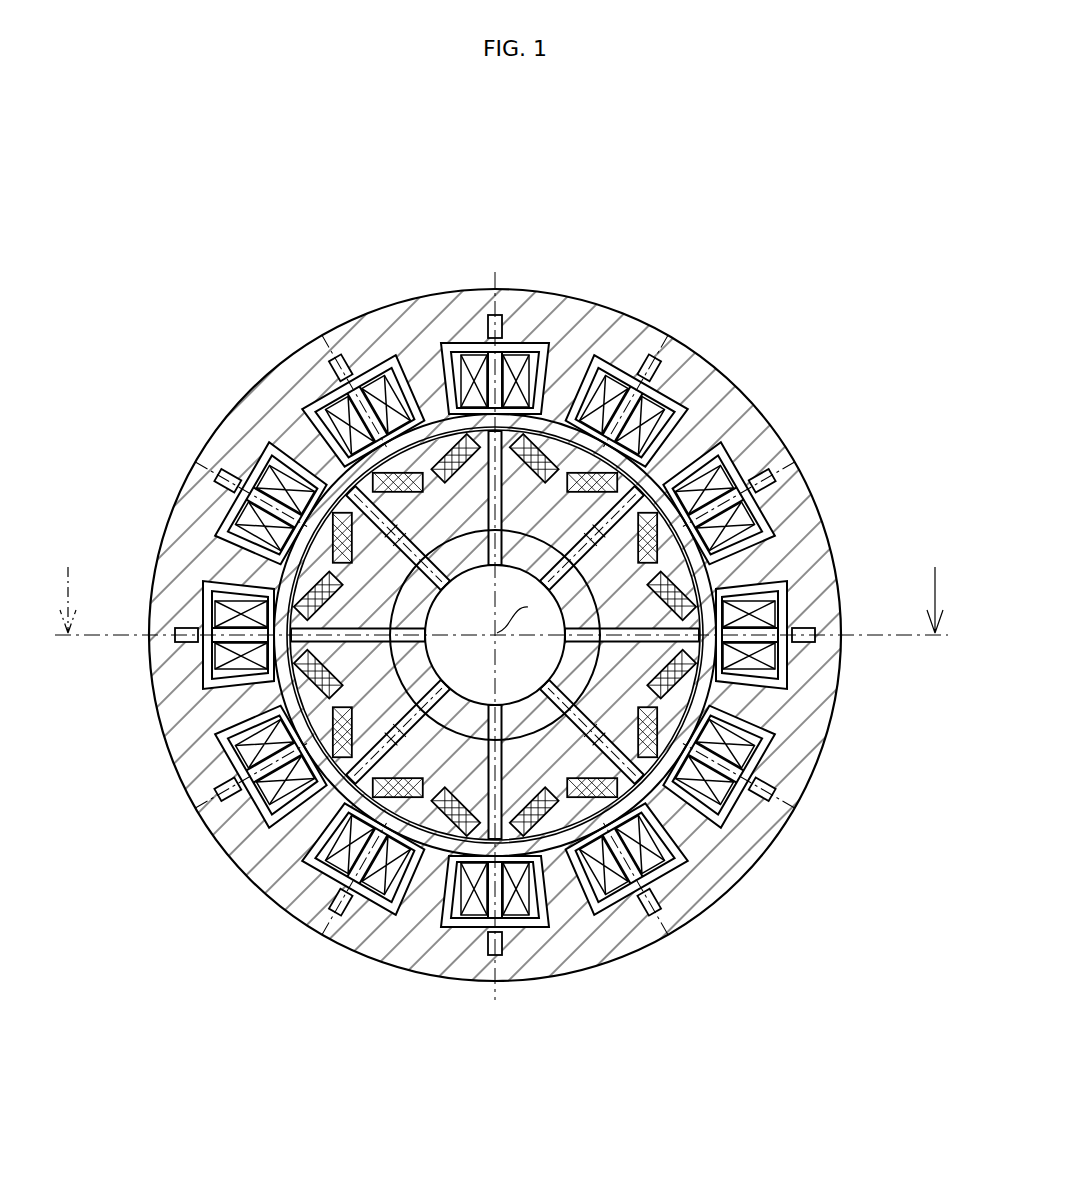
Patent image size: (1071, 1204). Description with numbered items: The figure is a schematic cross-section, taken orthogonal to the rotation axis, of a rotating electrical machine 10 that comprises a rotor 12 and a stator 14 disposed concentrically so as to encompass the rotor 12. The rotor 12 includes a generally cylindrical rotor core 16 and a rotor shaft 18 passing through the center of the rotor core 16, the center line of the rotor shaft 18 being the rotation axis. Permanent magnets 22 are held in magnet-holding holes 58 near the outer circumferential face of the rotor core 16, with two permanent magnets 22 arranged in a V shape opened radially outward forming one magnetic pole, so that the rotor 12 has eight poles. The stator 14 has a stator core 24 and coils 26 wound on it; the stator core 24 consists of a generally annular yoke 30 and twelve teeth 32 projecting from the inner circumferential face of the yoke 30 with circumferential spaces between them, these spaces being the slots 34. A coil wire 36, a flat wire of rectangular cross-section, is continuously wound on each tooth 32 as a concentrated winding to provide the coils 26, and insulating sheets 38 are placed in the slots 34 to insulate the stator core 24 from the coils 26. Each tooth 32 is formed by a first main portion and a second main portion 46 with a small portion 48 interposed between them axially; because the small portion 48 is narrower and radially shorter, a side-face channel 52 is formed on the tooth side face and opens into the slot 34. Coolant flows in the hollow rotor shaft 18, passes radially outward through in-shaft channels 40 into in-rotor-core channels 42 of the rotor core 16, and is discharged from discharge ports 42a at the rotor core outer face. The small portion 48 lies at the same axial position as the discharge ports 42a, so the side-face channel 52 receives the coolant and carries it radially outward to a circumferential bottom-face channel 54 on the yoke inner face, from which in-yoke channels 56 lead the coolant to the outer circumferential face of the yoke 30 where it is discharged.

The rotating electrical machine 10 is at (844, 170).
The rotor 12 is at (438, 385).
The stator 14 is at (536, 289).
The rotor core 16 is at (427, 457).
The rotor shaft 18 is at (297, 453).
The permanent magnets 22 is at (385, 486).
The stator core 24 is at (585, 330).
The coils 26 is at (625, 340).
The yoke 30 is at (680, 363).
The teeth 32 is at (680, 450).
The slots 34 is at (765, 447).
The coil wire 36 is at (790, 500).
The insulating sheets 38 is at (790, 535).
The in-shaft channels 40 is at (378, 690).
The in-rotor-core channels 42 is at (292, 688).
The discharge ports 42a is at (265, 830).
The second main portion 46 is at (768, 662).
The small portion 48 is at (753, 702).
The side-face channel 52 is at (762, 713).
The bottom-face channel 54 is at (807, 777).
The in-yoke channels 56 is at (607, 915).
The magnet-holding holes 58 is at (363, 897).